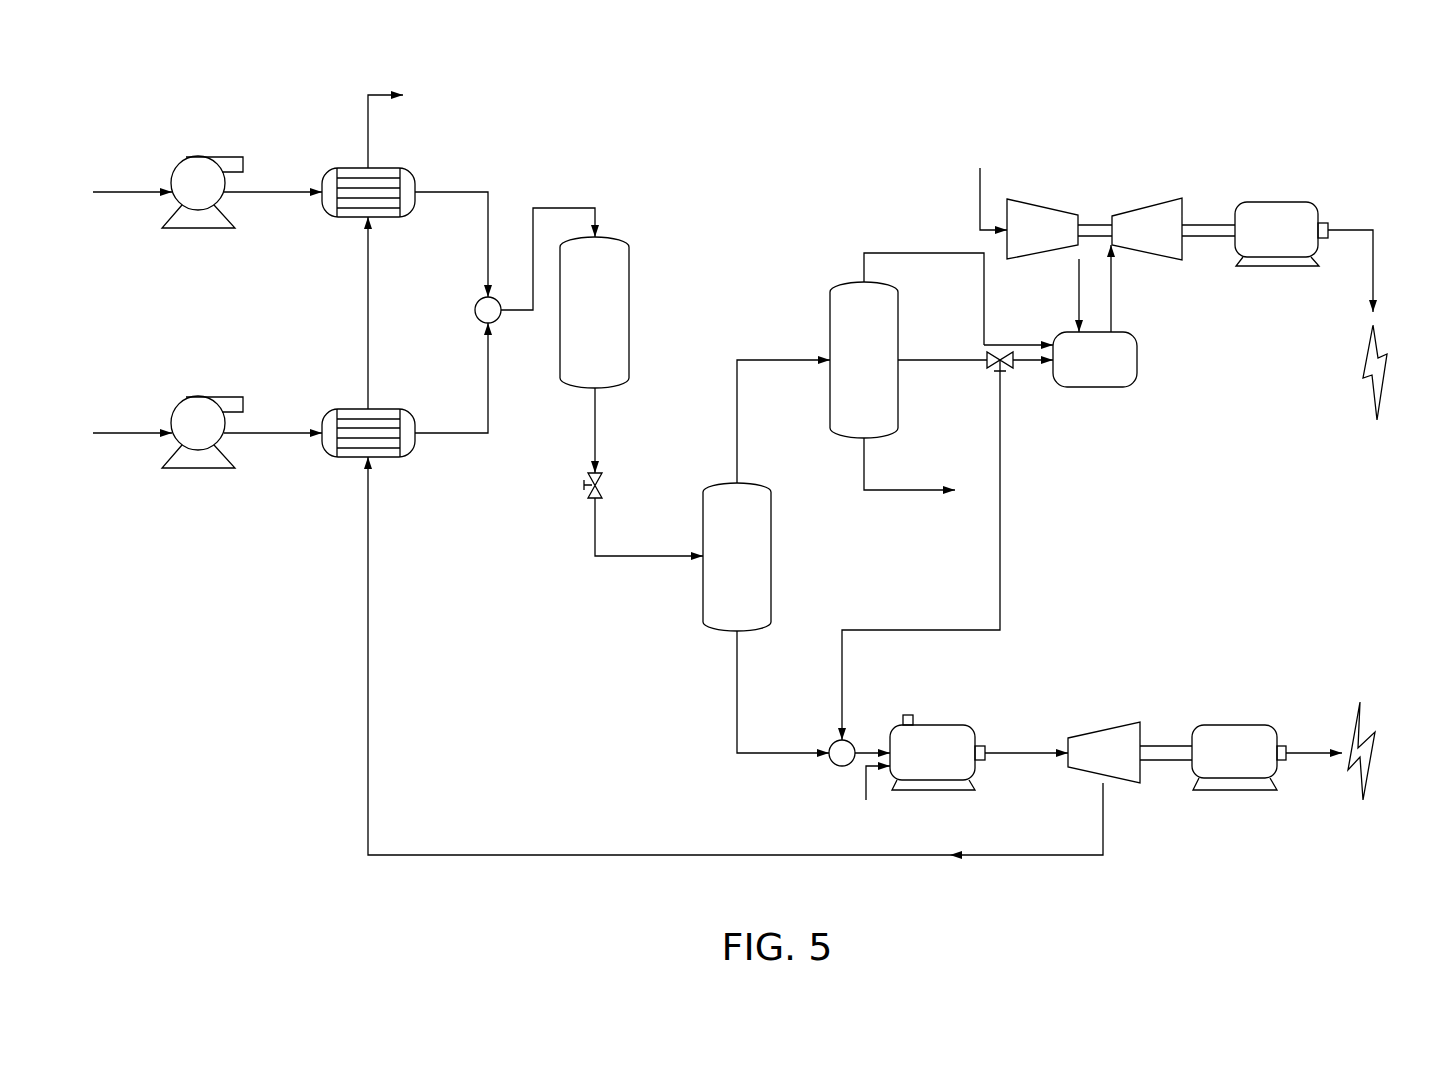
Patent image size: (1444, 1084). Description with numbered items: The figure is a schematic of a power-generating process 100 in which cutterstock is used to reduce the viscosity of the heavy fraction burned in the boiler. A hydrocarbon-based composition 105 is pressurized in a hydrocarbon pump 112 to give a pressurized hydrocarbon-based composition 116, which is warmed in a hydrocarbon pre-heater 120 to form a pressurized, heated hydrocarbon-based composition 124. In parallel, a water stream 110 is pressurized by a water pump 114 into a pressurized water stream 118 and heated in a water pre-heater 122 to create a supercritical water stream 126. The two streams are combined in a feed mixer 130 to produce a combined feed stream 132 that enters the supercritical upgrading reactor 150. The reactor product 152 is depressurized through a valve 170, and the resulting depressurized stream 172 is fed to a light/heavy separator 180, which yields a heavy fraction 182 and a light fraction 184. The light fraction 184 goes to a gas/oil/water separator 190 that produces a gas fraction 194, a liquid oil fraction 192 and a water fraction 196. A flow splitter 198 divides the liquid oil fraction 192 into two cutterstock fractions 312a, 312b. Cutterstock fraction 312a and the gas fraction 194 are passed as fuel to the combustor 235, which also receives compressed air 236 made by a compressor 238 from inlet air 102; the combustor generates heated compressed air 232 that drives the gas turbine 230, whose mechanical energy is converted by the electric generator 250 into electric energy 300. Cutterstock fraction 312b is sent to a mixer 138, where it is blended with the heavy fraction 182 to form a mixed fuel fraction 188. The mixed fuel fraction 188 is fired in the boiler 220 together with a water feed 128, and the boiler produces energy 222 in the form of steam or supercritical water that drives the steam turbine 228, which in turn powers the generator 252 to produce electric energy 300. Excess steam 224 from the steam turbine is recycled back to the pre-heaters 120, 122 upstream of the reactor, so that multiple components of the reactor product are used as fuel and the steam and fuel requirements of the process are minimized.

The process 100 is at (1300, 113).
The inlet air 102 is at (980, 172).
The hydrocarbon-based composition 105 is at (145, 192).
The water stream 110 is at (145, 433).
The hydrocarbon pump 112 is at (203, 157).
The water pump 114 is at (212, 397).
The pressurized hydrocarbon-based composition 116 is at (292, 192).
The pressurized water stream 118 is at (292, 433).
The hydrocarbon pre-heater 120 is at (345, 168).
The water pre-heater 122 is at (345, 409).
The pressurized, heated hydrocarbon-based composition 124 is at (472, 192).
The supercritical water stream 126 is at (440, 433).
The water feed 128 is at (866, 800).
The feed mixer 130 is at (475, 313).
The combined feed stream 132 is at (548, 208).
The mixer 138 is at (838, 768).
The supercritical upgrading reactor 150 is at (629, 312).
The reactor product 152 is at (593, 428).
The valve 170 is at (587, 497).
The depressurized stream 172 is at (665, 556).
The light/heavy separator 180 is at (702, 598).
The heavy fraction 182 is at (737, 670).
The light fraction 184 is at (762, 360).
The mixed fuel fraction 188 is at (868, 748).
The gas/oil/water separator 190 is at (898, 318).
The liquid oil fraction 192 is at (978, 363).
The gas fraction 194 is at (912, 253).
The water fraction 196 is at (864, 462).
The flow splitter 198 is at (1005, 372).
The boiler 220 is at (938, 725).
The energy 222 is at (1030, 768).
The steam 224 is at (380, 95).
The steam turbine 228 is at (1100, 735).
The gas turbine 230 is at (1122, 216).
The heated compressed air 232 is at (1112, 292).
The combustor 235 is at (1092, 388).
The compressed air 236 is at (1078, 285).
The compressor 238 is at (1047, 199).
The electric generator 250 is at (1300, 202).
The generator 252 is at (1240, 725).
The electric energy 300 is at (1362, 372).
The cutterstock fraction 312a is at (1018, 352).
The cutterstock fraction 312b is at (912, 630).